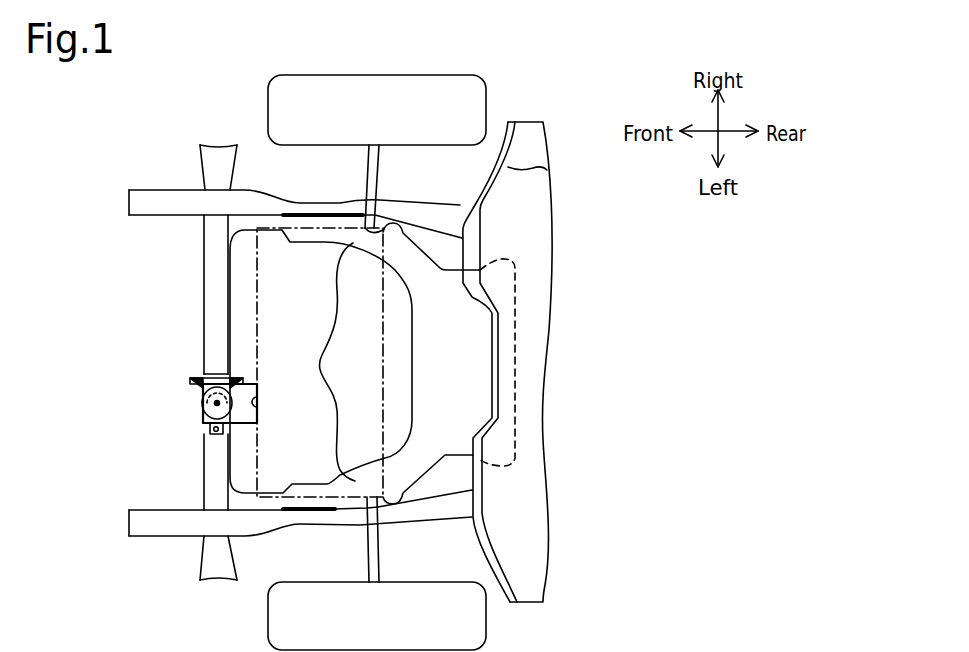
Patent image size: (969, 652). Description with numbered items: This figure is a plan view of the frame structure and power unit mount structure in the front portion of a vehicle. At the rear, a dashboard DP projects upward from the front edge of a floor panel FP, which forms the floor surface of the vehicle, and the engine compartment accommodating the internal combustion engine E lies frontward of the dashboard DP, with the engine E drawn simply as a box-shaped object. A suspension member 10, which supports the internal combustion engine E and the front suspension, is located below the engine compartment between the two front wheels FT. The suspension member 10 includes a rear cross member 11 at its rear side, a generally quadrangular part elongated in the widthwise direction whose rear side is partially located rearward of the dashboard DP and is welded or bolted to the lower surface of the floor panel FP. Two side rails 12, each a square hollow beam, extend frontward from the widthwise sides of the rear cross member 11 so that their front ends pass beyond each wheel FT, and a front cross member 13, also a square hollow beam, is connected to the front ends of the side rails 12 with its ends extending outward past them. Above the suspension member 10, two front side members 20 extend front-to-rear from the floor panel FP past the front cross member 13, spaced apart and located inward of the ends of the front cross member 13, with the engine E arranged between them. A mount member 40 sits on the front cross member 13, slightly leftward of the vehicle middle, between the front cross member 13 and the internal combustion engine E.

The suspension member 10 is at (354, 363).
The rear cross member 11 is at (482, 365).
The side rail 12 is at (322, 362).
The front cross member 13 is at (204, 470).
The front side member 20 is at (155, 188).
The mount member 40 is at (197, 403).
The internal combustion engine E is at (257, 273).
The front wheel FT is at (486, 94).
The dashboard DP is at (547, 170).
The floor panel FP is at (535, 203).